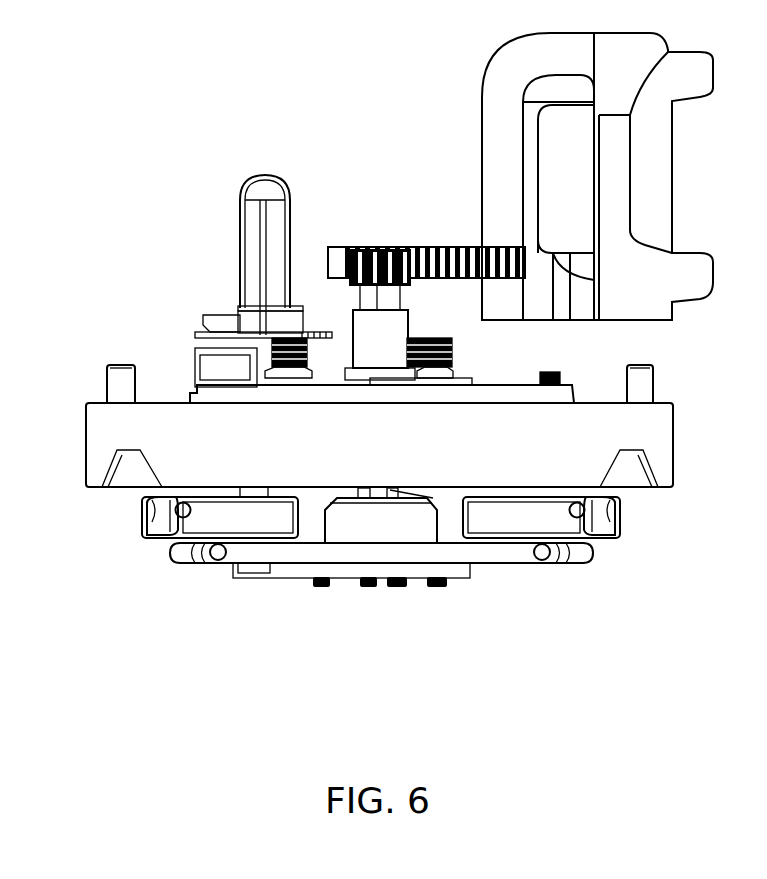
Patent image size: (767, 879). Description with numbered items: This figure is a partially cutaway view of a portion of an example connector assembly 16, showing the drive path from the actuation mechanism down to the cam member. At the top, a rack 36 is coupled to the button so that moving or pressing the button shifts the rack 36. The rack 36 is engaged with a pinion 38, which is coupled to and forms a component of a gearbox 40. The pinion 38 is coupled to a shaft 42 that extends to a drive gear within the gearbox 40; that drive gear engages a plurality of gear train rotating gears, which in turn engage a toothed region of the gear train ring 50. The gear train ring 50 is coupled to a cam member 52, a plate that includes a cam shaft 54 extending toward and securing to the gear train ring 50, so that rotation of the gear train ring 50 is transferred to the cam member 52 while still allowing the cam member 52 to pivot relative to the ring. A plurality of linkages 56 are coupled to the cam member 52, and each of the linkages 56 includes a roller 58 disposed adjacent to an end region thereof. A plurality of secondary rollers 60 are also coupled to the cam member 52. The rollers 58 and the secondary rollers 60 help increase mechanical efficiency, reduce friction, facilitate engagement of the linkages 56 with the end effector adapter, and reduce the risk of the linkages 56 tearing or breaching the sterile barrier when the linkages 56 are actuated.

The dispensing device 16 is at (270, 102).
The rack 36 is at (450, 248).
The pinion 38 is at (368, 247).
The gearbox 40 is at (575, 382).
The shaft 42 is at (390, 352).
The gear train ring 50 is at (517, 397).
The cam member 52 is at (292, 553).
The cam shaft 54 is at (392, 492).
The linkages 56 is at (157, 538).
The roller 58 is at (143, 508).
The secondary rollers 60 is at (188, 555).